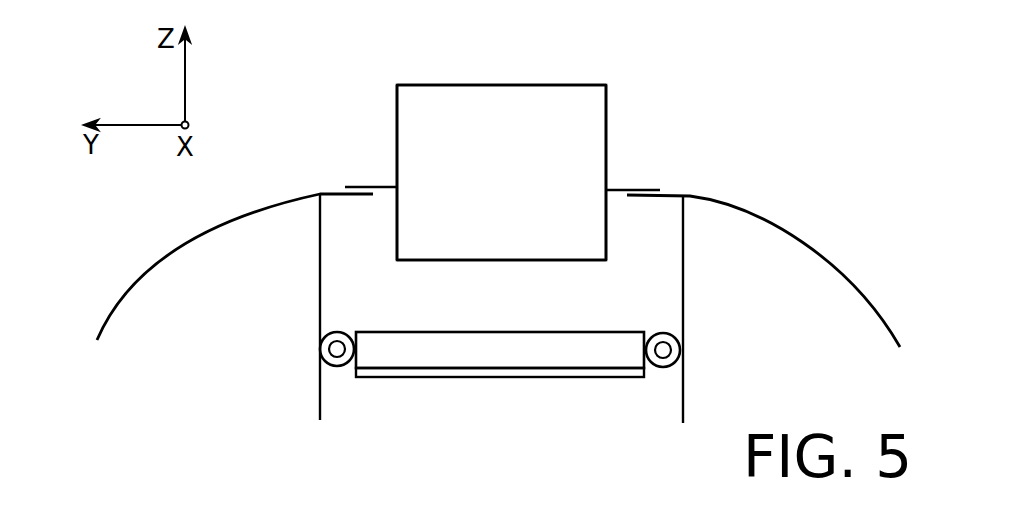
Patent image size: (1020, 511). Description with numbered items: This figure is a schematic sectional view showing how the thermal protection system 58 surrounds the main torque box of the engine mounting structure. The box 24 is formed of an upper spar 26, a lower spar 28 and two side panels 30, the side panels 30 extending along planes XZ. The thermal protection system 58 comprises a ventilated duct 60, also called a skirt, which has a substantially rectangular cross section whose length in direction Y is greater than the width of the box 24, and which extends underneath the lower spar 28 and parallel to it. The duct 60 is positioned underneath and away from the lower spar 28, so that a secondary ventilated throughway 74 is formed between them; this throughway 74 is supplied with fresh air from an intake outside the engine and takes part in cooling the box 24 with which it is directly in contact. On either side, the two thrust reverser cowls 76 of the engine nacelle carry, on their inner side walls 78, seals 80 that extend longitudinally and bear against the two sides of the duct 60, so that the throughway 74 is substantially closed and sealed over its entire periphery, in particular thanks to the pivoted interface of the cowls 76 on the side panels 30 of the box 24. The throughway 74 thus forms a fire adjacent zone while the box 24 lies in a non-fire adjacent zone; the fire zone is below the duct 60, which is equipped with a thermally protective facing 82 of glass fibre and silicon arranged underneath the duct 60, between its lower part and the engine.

The box 24 is at (397, 126).
The upper spar 26 is at (496, 85).
The lower spar 28 is at (468, 259).
The side panels 30 is at (397, 160).
The thermal protection system 58 is at (418, 392).
The ventilated duct 60 is at (530, 360).
The secondary ventilated throughway 74 is at (434, 302).
The thrust reverser cowls 76 is at (206, 245).
The inner side walls 78 is at (320, 262).
The seals 80 is at (337, 332).
The thermally protective facing 82 is at (616, 378).